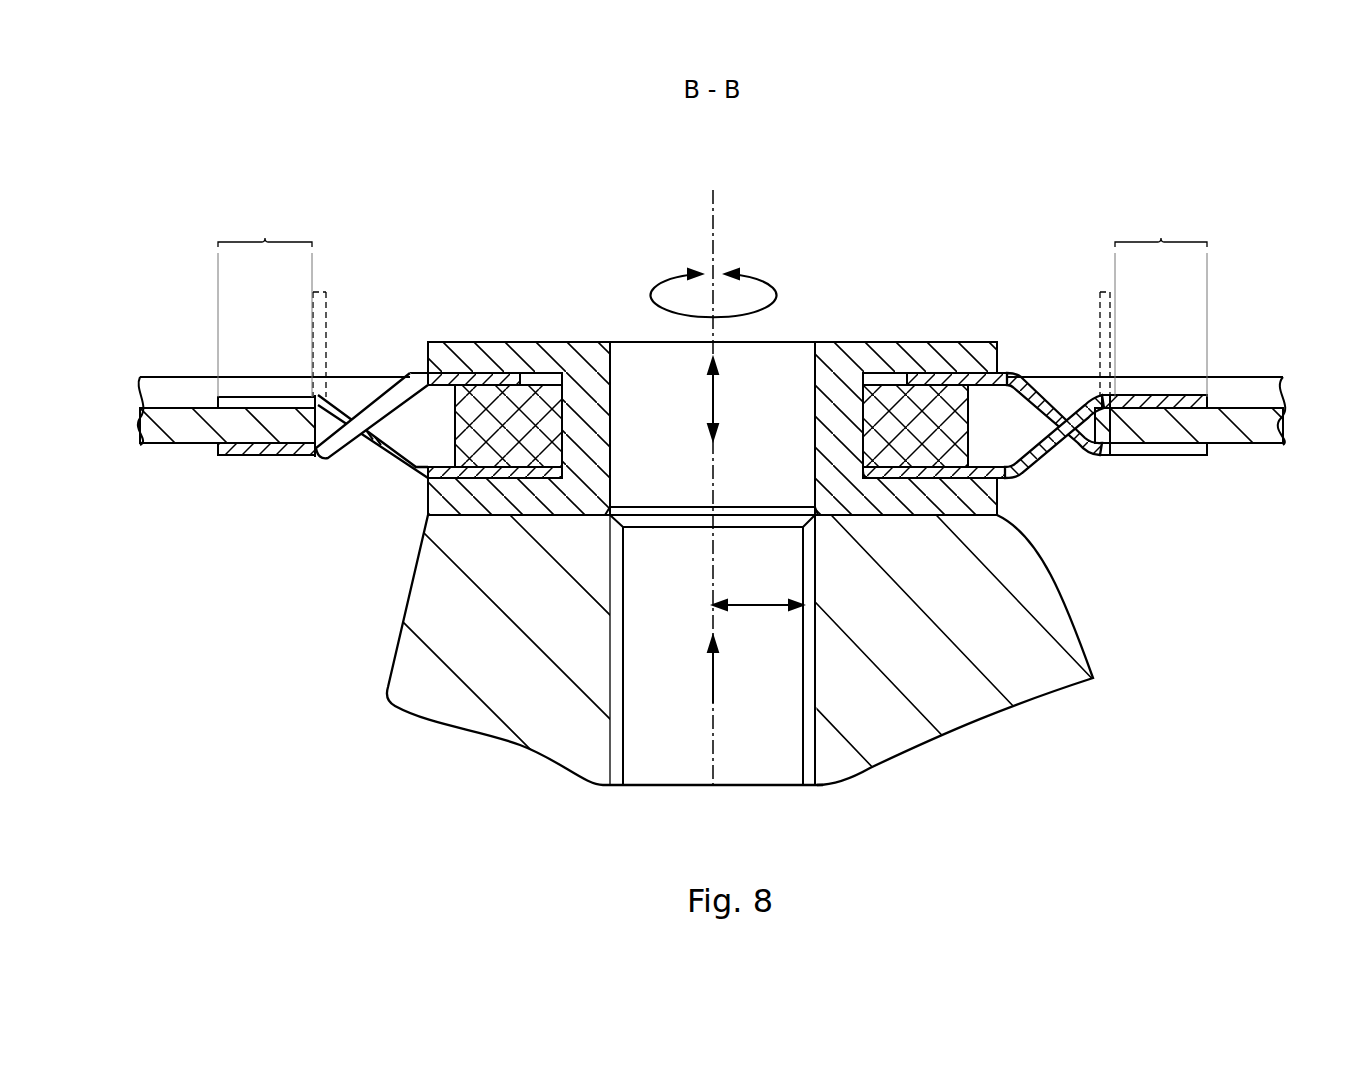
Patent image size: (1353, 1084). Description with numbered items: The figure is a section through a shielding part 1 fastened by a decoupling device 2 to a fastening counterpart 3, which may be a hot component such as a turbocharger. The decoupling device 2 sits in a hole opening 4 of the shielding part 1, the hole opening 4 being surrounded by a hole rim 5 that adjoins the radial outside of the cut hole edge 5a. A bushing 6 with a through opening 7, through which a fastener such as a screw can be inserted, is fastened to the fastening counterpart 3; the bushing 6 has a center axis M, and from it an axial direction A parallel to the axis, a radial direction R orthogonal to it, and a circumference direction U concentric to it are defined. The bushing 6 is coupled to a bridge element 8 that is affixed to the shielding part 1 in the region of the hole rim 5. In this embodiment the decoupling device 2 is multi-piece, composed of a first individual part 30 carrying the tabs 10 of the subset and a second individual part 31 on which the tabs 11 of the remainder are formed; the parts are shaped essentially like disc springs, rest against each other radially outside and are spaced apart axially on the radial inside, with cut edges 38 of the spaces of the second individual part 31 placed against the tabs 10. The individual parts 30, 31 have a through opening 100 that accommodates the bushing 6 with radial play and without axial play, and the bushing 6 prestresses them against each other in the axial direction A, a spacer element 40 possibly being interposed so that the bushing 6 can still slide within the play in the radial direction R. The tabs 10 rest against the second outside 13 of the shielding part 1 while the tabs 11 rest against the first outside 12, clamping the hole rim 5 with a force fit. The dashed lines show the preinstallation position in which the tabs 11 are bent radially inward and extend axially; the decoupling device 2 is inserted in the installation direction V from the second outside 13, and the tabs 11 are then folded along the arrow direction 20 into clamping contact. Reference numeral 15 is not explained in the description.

The shielding part 1 is at (183, 368).
The decoupling device 2 is at (954, 313).
The fastening counterpart 3 is at (1074, 636).
The hole opening 4 is at (323, 420).
The hole rim 5 is at (265, 236).
The cut hole edge 5a is at (1090, 432).
The bushing 6 is at (489, 345).
The through opening 7 is at (637, 372).
The bridge element 8 is at (1045, 405).
The tabs of the subset 10 is at (240, 456).
The tabs of the remainder 11 is at (326, 292).
The first outside 12 is at (160, 405).
The second outside 13 is at (176, 456).
The ring 15 is at (1208, 400).
The arrow direction 20 is at (313, 305).
The first individual part 30 is at (420, 372).
The second individual part 31 is at (410, 486).
The cut edges 38 is at (366, 433).
The spacer element 40 is at (498, 456).
The through opening 100 is at (542, 376).
The center axis M is at (718, 196).
The circumference direction U is at (777, 295).
The axial direction A is at (716, 397).
The radial direction R is at (752, 600).
The installation direction V is at (714, 677).